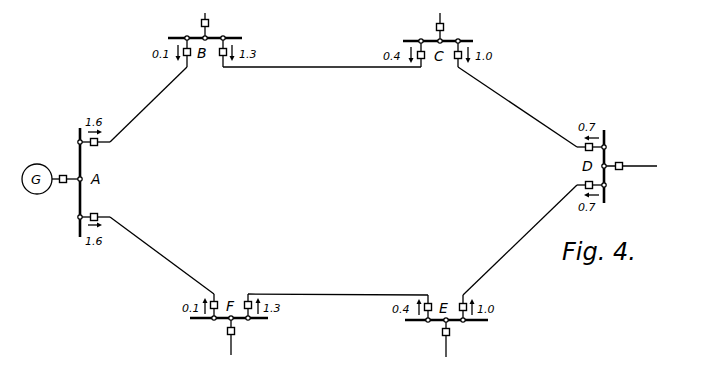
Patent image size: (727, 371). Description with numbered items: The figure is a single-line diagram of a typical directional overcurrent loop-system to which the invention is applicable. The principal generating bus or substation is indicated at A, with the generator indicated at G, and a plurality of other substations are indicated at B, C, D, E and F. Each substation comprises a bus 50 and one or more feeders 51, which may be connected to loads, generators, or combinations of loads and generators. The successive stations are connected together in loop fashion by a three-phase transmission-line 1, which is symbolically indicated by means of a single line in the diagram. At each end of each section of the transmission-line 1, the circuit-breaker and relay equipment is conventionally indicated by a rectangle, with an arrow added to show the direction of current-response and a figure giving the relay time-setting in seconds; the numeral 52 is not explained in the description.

The three-phase transmission-line 1 is at (147, 106).
The bus 50 is at (237, 40).
The feeder 51 is at (205, 14).
The circuit breaker 52 is at (96, 147).